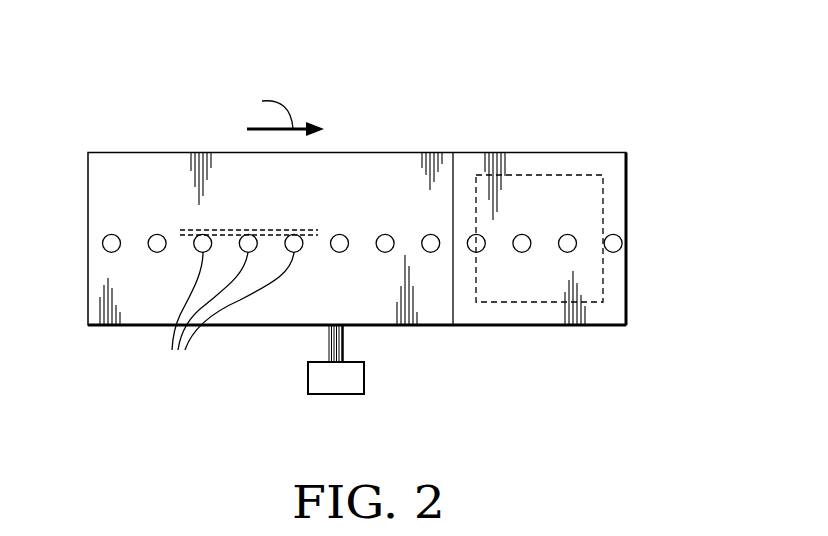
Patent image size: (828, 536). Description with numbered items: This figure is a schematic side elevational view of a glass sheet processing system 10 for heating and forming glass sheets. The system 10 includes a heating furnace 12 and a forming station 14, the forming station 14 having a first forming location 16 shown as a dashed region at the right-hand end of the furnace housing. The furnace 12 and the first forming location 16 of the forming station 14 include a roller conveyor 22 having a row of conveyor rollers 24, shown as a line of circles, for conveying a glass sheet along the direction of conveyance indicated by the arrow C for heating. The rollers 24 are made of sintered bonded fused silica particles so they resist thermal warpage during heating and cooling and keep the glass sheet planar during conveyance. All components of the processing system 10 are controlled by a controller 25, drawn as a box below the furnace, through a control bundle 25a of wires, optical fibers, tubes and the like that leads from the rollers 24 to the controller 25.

The glass sheet processing system 10 is at (454, 81).
The heating furnace 12 is at (349, 150).
The forming station 14 is at (640, 190).
The first forming location 16 is at (538, 328).
The roller conveyor 22 is at (100, 243).
The conveyor rollers 24 is at (229, 314).
The control bundle 25a is at (330, 343).
The controller 25 is at (364, 378).